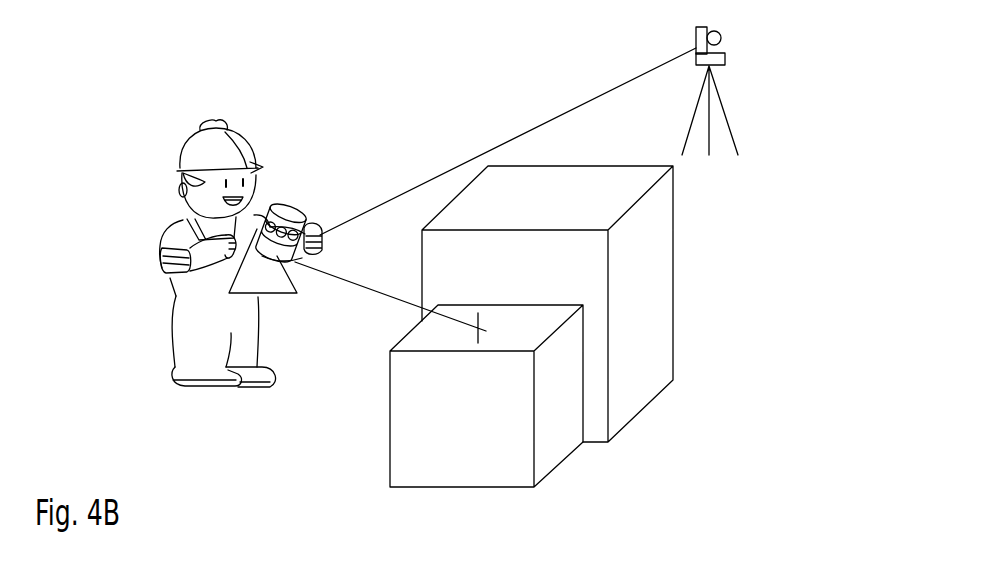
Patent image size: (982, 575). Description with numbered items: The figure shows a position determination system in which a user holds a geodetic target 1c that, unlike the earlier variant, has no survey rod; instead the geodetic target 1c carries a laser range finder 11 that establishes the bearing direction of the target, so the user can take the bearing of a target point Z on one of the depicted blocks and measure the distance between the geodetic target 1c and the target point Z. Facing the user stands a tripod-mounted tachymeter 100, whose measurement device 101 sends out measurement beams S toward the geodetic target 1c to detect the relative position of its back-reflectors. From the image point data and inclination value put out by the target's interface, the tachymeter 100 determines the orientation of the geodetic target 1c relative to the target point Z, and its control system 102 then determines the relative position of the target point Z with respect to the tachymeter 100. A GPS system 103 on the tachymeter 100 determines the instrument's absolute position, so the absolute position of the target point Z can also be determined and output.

The geodetic target 1c is at (309, 211).
The laser range finder 11 is at (297, 295).
The measurement beams S is at (513, 138).
The target point Z is at (401, 303).
The tachymeter 100 is at (731, 78).
The measurement device 101 is at (721, 38).
The control system 102 is at (695, 33).
The GPS system 103 is at (694, 66).